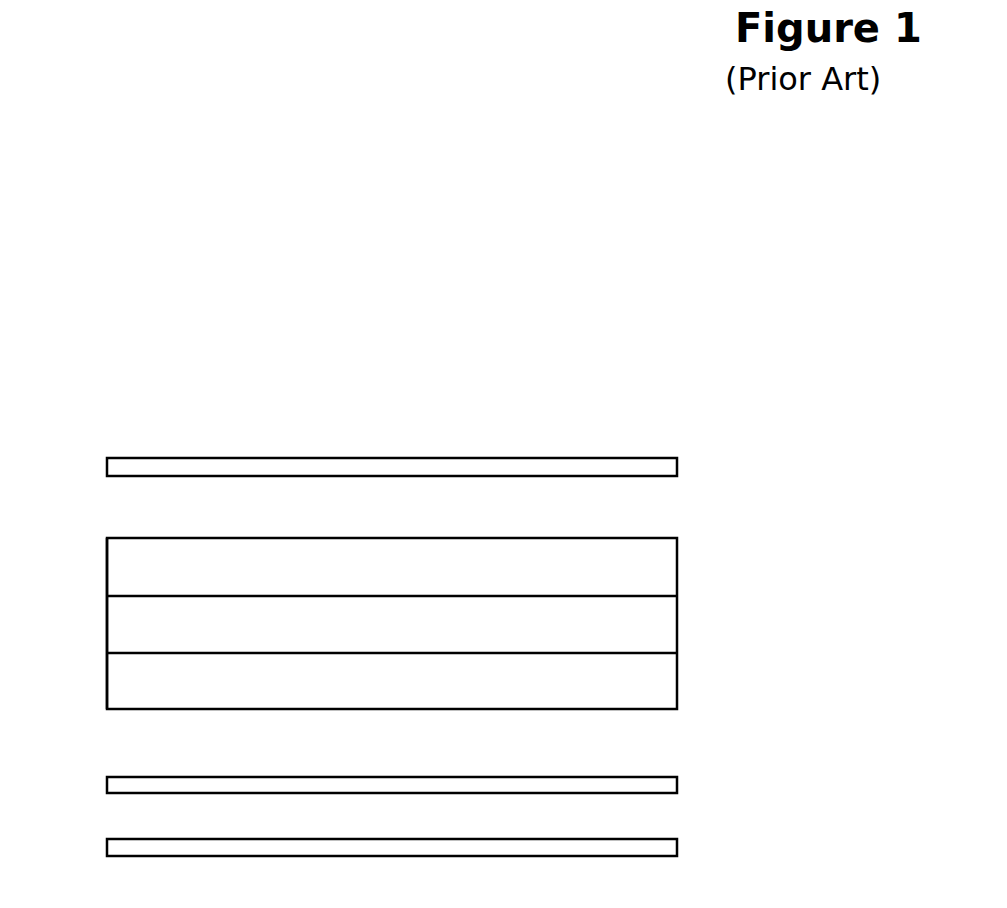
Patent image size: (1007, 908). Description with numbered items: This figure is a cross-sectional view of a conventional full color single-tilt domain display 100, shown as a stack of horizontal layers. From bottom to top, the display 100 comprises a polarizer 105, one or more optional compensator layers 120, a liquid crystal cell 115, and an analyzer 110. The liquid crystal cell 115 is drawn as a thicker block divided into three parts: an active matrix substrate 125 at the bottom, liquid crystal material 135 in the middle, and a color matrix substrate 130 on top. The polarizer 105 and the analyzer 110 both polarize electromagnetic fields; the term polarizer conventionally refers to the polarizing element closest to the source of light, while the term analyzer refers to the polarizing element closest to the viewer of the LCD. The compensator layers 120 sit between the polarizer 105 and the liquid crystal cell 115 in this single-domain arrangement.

The full color single-tilt domain display 100 is at (640, 380).
The polarizer 105 is at (677, 847).
The analyzer 110 is at (677, 463).
The liquid crystal cell 115 is at (690, 713).
The compensator layer 120 is at (677, 784).
The active matrix substrate 125 is at (107, 689).
The color matrix substrate 130 is at (107, 549).
The liquid crystal material 135 is at (107, 614).